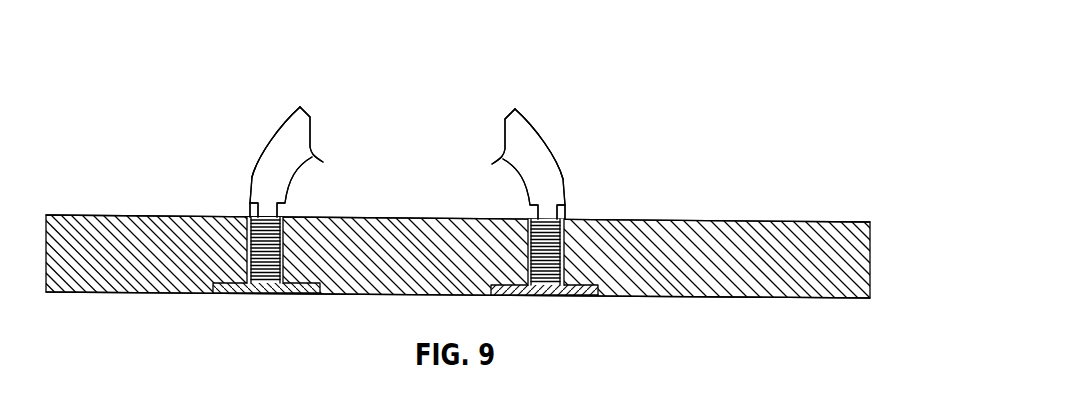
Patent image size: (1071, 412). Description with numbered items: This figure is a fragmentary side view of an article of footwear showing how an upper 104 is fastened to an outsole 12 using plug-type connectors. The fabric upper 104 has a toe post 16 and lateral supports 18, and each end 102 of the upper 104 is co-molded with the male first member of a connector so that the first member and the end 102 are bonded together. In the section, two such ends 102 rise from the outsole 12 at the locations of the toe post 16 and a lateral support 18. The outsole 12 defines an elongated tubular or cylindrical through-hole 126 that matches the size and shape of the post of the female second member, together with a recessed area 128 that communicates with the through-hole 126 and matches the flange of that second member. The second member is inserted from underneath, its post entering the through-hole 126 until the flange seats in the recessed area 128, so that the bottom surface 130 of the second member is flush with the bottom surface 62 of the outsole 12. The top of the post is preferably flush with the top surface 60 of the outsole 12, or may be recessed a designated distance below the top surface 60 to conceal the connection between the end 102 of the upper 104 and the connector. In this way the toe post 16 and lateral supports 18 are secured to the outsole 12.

The outsole 12 is at (680, 165).
The toe post 16 is at (222, 187).
The lateral supports 18 is at (478, 183).
The top surface of the outsole 60 is at (742, 222).
The bottom surface of the outsole 62 is at (685, 297).
The end of the upper 102 is at (268, 152).
The upper 104 is at (251, 123).
The through-hole 126 is at (282, 240).
The recessed area 128 is at (228, 283).
The bottom surface of the second member 130 is at (266, 294).